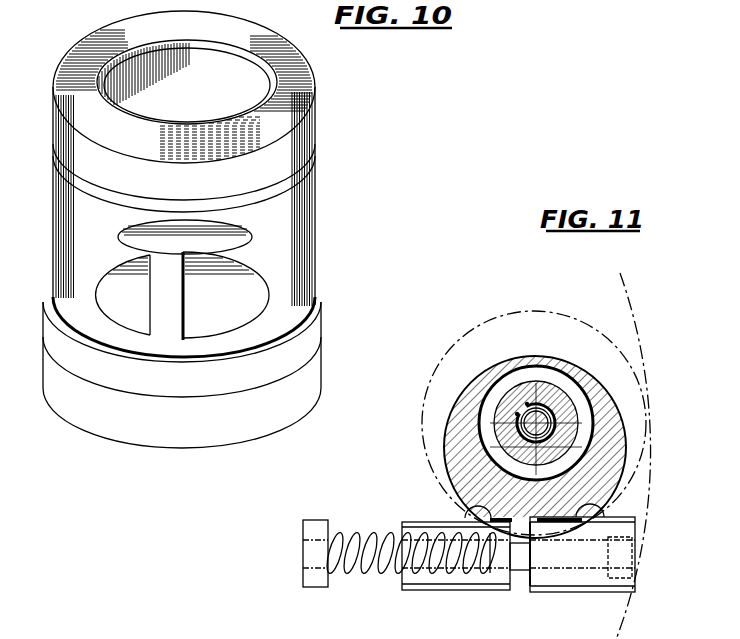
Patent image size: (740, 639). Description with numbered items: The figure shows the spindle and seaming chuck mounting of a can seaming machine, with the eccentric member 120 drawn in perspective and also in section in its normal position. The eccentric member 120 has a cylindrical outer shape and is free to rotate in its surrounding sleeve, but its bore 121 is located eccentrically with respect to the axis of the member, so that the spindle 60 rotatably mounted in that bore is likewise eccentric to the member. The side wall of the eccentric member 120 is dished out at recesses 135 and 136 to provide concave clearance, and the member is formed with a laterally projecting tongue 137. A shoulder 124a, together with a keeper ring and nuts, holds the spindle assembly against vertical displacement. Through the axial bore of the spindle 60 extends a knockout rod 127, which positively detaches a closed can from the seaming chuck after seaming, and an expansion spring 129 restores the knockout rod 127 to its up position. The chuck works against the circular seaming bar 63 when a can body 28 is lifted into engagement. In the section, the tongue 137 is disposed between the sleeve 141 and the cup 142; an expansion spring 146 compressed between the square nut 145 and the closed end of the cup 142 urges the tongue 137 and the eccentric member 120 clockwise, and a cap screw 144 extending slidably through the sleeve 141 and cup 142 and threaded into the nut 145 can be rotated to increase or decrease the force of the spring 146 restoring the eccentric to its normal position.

In FIG. 11, the can body 28 is at (533, 306).
In FIG. 11, the spindle 60 is at (554, 388).
In FIG. 11, the seaming bar 63 is at (630, 310).
In FIG. 10, the eccentric member 120 is at (314, 192).
In FIG. 11, the eccentric member 120 is at (612, 444).
In FIG. 10, the eccentric bore 121 is at (117, 40).
In FIG. 11, the eccentric bore 121 is at (586, 403).
In FIG. 10, the shoulder 124a is at (319, 308).
In FIG. 11, the knockout rod 127 is at (527, 402).
In FIG. 11, the expansion spring 129 is at (509, 412).
In FIG. 10, the concave clearance recess 135 is at (122, 234).
In FIG. 10, the concave clearance recess 136 is at (110, 274).
In FIG. 11, the concave clearance recess 136 is at (466, 510).
In FIG. 10, the tongue 137 is at (152, 299).
In FIG. 11, the tongue 137 is at (522, 572).
In FIG. 11, the sleeve 141 is at (570, 590).
In FIG. 11, the cup 142 is at (420, 588).
In FIG. 11, the cap screw 144 is at (498, 570).
In FIG. 11, the square nut 145 is at (303, 574).
In FIG. 11, the expansion spring 146 is at (350, 572).